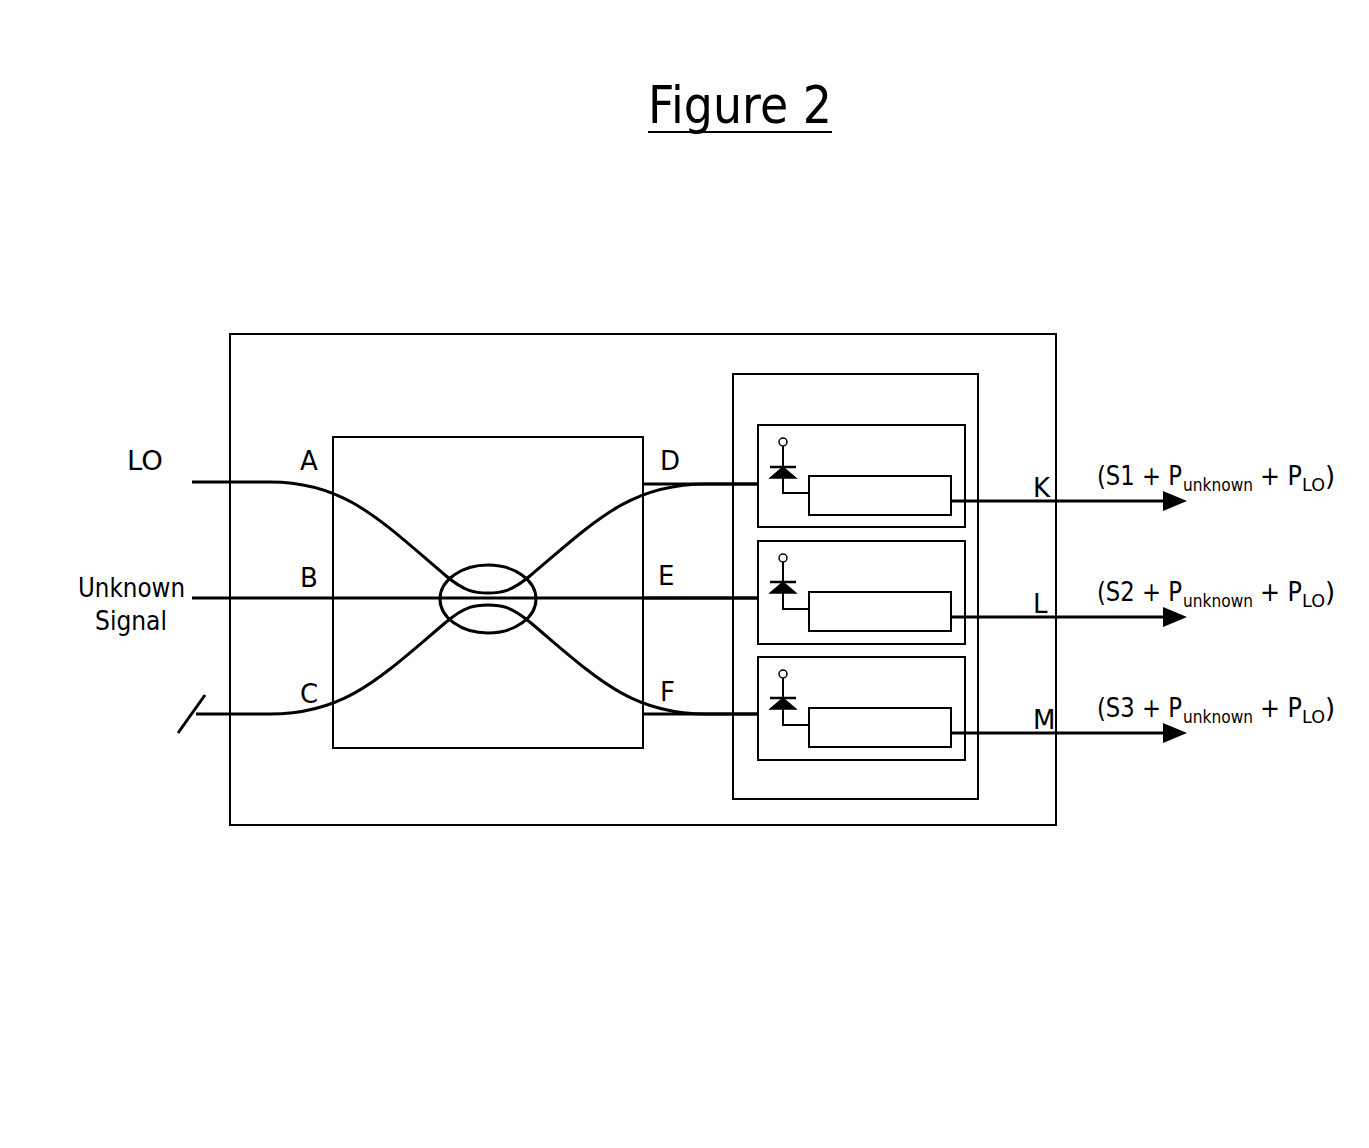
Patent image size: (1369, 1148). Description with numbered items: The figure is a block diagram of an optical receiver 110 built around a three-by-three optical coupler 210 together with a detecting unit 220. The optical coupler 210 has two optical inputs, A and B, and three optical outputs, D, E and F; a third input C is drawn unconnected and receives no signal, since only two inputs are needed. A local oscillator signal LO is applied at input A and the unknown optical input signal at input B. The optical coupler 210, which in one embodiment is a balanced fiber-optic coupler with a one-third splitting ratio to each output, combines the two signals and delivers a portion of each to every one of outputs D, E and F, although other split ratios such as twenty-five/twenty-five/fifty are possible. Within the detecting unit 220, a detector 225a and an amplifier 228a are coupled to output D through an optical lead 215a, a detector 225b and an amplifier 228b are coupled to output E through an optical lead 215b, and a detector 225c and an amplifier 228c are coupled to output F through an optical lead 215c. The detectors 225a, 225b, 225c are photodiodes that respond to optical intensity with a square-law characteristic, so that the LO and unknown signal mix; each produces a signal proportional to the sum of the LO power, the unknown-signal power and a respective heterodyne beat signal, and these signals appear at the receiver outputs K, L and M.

The optical receiver 110 is at (262, 281).
The 3×3 optical coupler 210 is at (427, 403).
The optical lead 215a is at (707, 473).
The optical lead 215b is at (720, 592).
The optical lead 215c is at (708, 722).
The detecting unit 220 is at (787, 403).
The detector 225a is at (890, 472).
The detector 225b is at (890, 588).
The detector 225c is at (890, 704).
The amplifier 228a is at (868, 507).
The amplifier 228b is at (868, 623).
The amplifier 228c is at (868, 739).